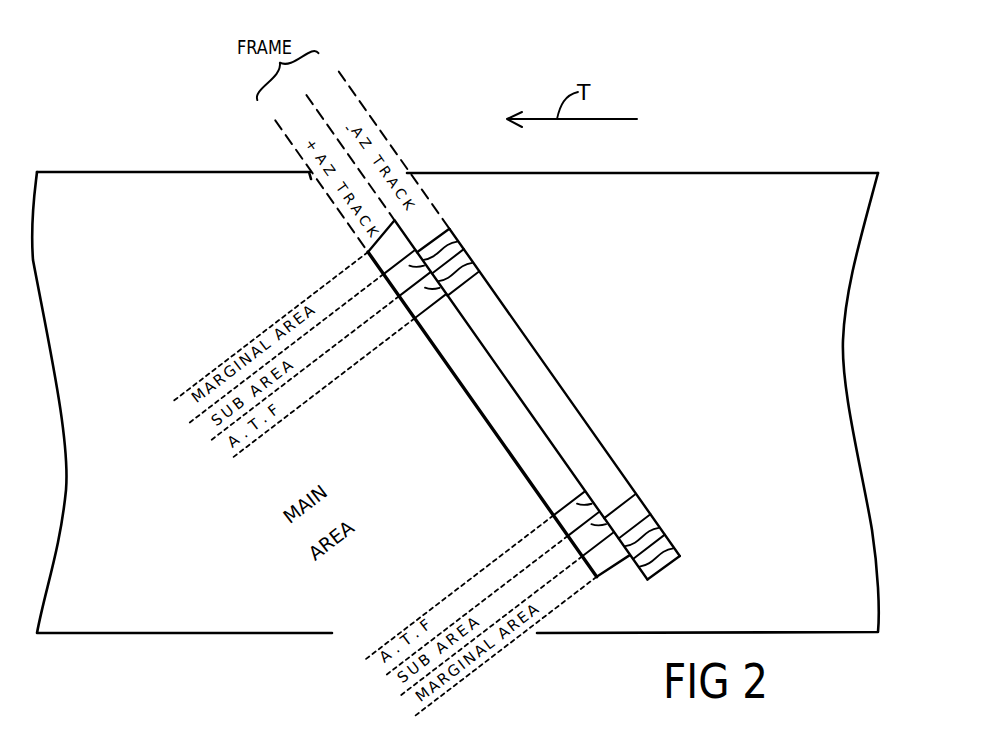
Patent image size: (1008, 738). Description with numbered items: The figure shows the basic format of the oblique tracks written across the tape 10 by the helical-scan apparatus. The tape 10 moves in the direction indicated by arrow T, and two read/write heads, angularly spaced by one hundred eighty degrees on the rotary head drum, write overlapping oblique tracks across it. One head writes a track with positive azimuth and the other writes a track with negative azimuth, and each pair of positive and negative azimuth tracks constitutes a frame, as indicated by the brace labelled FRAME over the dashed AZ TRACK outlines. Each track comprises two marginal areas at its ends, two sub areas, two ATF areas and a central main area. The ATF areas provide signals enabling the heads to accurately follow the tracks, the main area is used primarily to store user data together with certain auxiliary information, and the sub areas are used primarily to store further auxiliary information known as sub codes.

The tape 10 is at (767, 181).